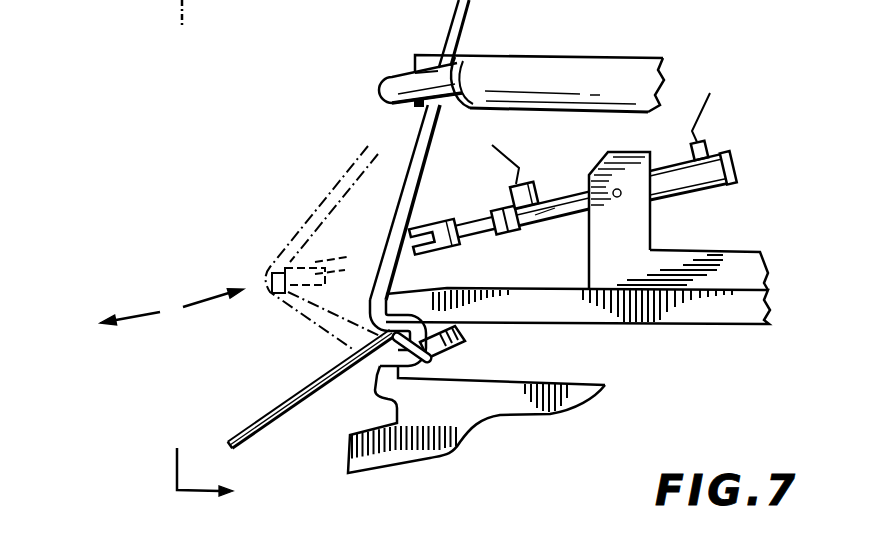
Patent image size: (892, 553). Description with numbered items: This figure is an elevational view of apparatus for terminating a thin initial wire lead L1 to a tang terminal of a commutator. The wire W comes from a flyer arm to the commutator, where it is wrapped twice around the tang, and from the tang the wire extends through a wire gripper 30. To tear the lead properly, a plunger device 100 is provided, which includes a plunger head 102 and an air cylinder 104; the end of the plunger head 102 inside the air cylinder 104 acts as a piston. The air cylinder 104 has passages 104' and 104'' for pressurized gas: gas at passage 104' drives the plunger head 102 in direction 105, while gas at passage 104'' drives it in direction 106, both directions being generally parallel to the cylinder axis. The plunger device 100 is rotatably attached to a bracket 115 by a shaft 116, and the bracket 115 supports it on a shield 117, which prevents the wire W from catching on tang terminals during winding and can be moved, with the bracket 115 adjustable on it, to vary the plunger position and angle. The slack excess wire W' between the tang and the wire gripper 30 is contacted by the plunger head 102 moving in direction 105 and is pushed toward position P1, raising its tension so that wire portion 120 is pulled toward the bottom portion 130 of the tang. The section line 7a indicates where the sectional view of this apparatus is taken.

The wire gripper 30 is at (537, 52).
The wire W is at (394, 111).
The excess wire W' is at (419, 183).
The position P1 is at (283, 234).
The direction 105 is at (142, 311).
The direction 106 is at (195, 296).
The initial wire lead L1 is at (268, 408).
The wire portion 120 is at (438, 370).
The bottom portion of tang 130 is at (365, 381).
The shield 117 is at (719, 305).
The shaft 116 is at (649, 152).
The bracket 115 is at (750, 262).
The plunger head 102 is at (454, 252).
The passage 104'' is at (555, 226).
The plunger device 100 is at (547, 186).
The air cylinder 104 is at (736, 175).
The passage 104' is at (744, 126).
The section line 7a is at (187, 490).